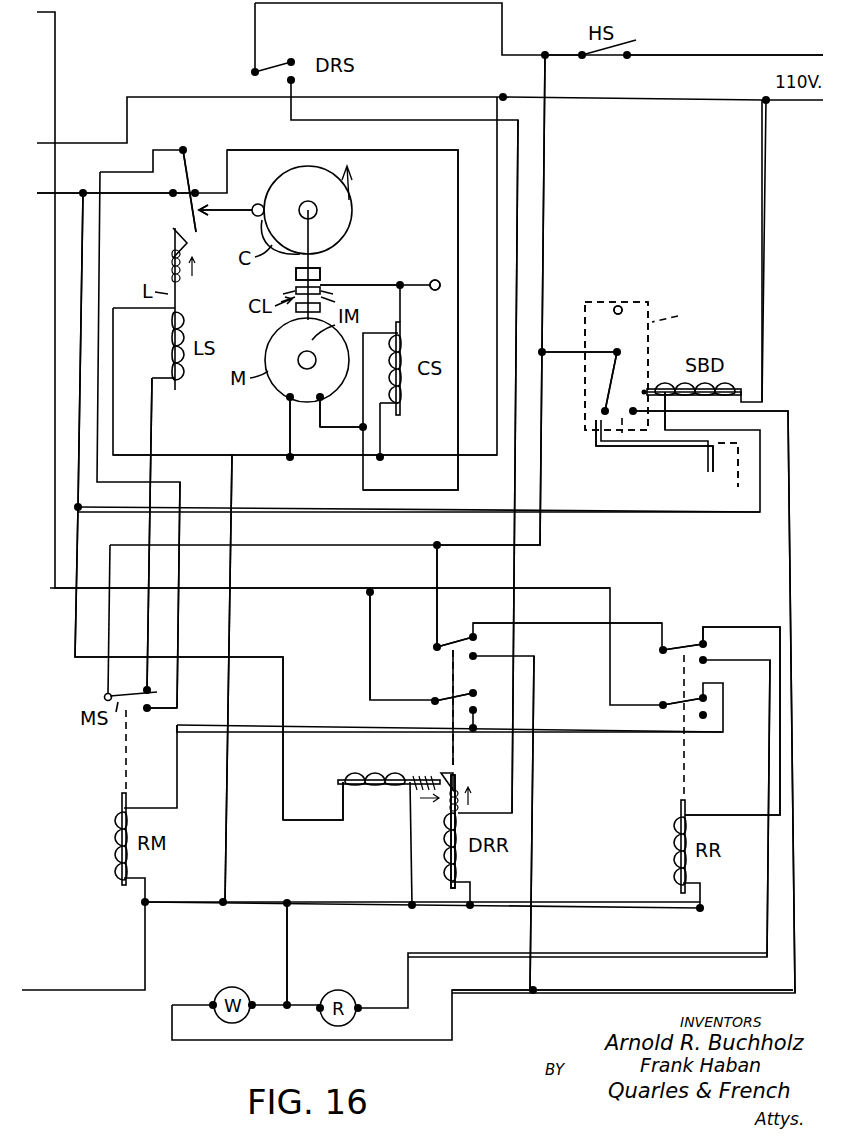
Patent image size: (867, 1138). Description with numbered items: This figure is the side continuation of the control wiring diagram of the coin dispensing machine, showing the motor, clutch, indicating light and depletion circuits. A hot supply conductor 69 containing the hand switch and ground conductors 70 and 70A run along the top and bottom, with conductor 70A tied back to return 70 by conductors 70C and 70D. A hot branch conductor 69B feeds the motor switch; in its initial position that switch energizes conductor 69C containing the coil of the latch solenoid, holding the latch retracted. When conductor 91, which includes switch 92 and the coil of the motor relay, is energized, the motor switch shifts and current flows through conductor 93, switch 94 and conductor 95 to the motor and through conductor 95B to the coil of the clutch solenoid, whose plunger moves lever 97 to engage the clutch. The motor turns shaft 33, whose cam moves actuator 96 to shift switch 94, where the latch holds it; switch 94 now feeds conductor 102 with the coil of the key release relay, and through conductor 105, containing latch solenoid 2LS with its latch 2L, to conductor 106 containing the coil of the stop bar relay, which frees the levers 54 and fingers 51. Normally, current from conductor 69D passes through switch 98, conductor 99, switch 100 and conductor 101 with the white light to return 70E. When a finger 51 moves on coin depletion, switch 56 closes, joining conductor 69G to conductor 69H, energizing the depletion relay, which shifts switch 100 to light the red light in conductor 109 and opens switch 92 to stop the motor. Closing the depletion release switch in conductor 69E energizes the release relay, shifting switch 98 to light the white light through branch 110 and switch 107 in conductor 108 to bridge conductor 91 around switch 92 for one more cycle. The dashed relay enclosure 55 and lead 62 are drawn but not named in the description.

The shaft 33 is at (318, 259).
The finger 51 is at (728, 487).
The lever 54 is at (652, 322).
The relay 55 is at (622, 295).
The switch 56 is at (610, 400).
The solenoid lead 62 is at (664, 388).
The hot supply conductor 69 is at (748, 58).
The hot branch conductor 69B is at (546, 223).
The conductor 69C is at (150, 440).
The conductor 69D is at (437, 572).
The conductor 69E is at (514, 574).
The conductor 69G is at (563, 355).
The conductor 69H is at (788, 556).
The ground conductor 70 is at (703, 100).
The ground conductor 70A is at (422, 896).
The conductor 70C is at (226, 840).
The conductor 70D is at (323, 458).
The return conductor 70E is at (288, 968).
The conductor 91 is at (60, 590).
The switch 92 is at (688, 700).
The conductor 93 is at (177, 642).
The switch 94 is at (185, 152).
The conductor 95 is at (460, 192).
The conductor 95B is at (362, 390).
The actuator 96 is at (203, 215).
The lever 97 is at (398, 284).
The switch 98 is at (440, 645).
The conductor 99 is at (571, 624).
The switch 100 is at (677, 642).
The conductor 101 is at (750, 625).
The conductor 102 is at (126, 195).
The conductor 105 is at (85, 277).
The conductor 106 is at (700, 518).
The switch 107 is at (444, 703).
The conductor 108 is at (370, 630).
The conductor 109 is at (767, 773).
The branch conductor 110 is at (534, 800).
The latch 2L is at (441, 761).
The latch solenoid 2LS is at (389, 776).